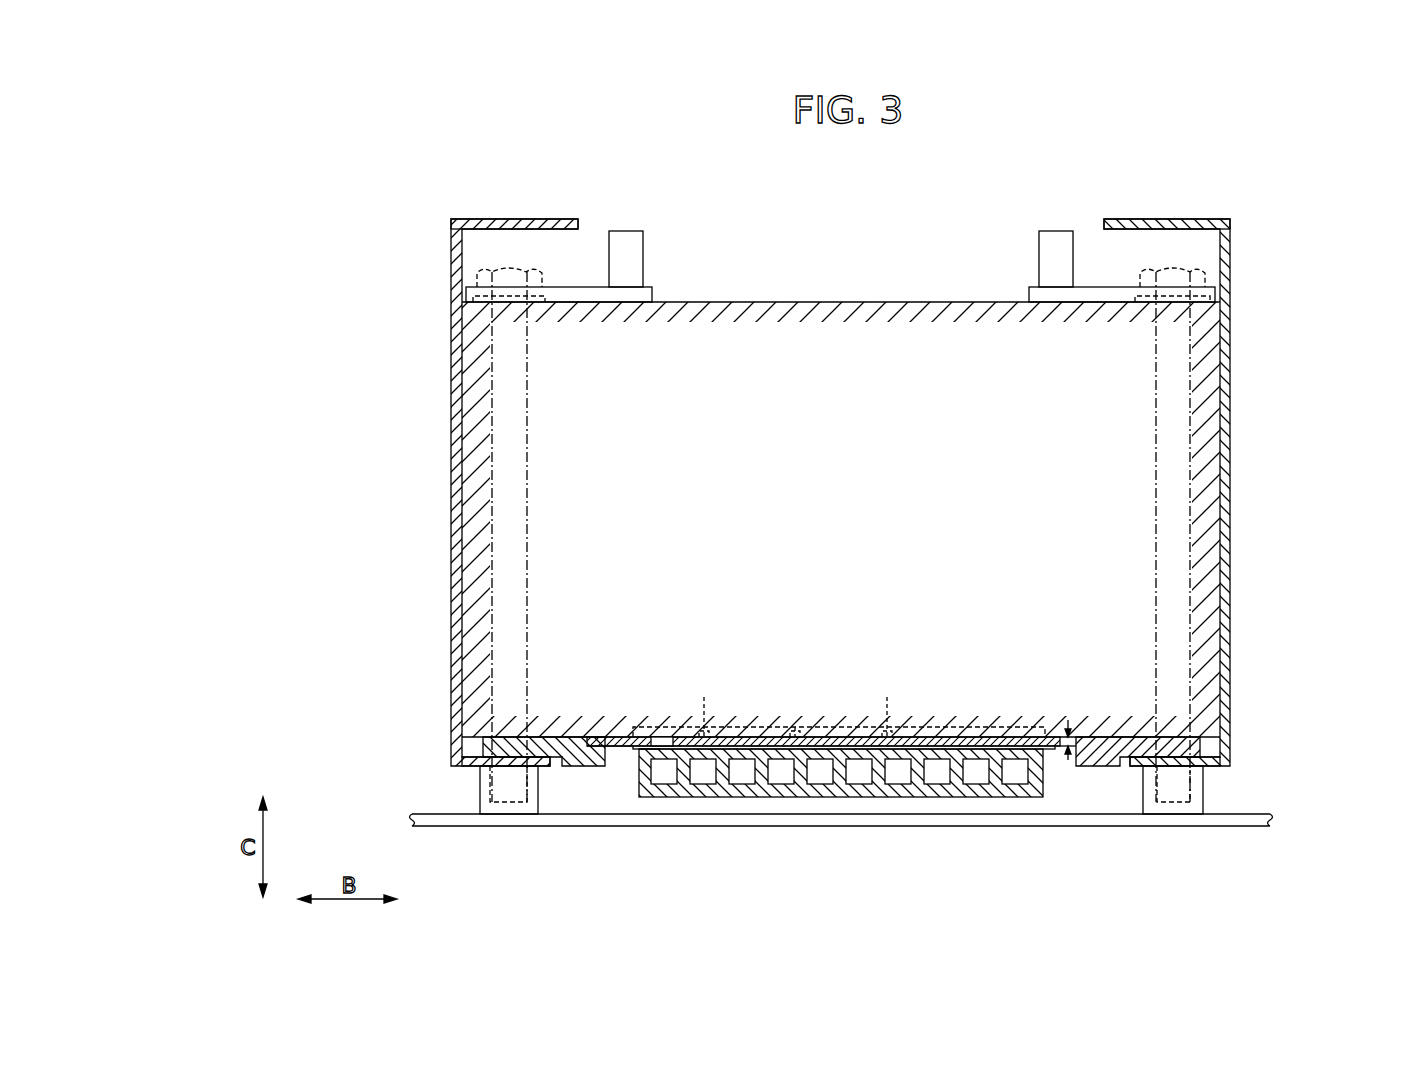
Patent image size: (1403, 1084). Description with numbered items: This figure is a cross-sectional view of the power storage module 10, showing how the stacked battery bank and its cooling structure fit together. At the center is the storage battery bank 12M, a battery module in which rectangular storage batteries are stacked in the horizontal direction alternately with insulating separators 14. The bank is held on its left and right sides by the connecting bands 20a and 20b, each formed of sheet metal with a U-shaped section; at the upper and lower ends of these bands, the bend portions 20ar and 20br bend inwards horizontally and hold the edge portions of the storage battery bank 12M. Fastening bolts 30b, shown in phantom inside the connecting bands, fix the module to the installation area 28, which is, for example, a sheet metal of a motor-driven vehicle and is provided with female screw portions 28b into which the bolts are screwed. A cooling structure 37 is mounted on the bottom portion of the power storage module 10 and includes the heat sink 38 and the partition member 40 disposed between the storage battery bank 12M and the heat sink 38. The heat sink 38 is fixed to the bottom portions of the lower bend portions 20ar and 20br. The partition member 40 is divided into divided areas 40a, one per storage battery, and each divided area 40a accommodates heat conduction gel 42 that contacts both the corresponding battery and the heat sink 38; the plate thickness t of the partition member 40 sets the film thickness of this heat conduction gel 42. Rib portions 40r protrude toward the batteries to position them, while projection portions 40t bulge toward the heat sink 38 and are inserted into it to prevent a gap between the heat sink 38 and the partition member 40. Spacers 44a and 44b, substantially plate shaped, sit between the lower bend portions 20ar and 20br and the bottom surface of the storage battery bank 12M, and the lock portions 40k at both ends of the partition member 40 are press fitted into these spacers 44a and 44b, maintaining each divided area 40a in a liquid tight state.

The power storage module 10 is at (790, 165).
The storage battery bank 12M is at (826, 292).
The separator 14 is at (762, 302).
The connecting band 20a is at (447, 265).
The connecting band 20b is at (1234, 272).
The bend portion 20ar is at (529, 220).
The bend portion 20br is at (1166, 220).
The fastening bolt 30b is at (540, 271).
The cooling structure 37 is at (841, 703).
The rib portion 40r is at (797, 704).
The heat conduction gel 42 is at (950, 737).
The divided area 40a is at (663, 737).
The partition member 40 is at (1058, 754).
The spacer 44a is at (572, 740).
The spacer 44b is at (1136, 740).
The lock portion 40k is at (603, 751).
The plate thickness t is at (1074, 723).
The heat sink 38 is at (885, 797).
The projection portion 40t is at (660, 750).
The female screw portion 28b is at (490, 791).
The installation area 28 is at (1104, 832).